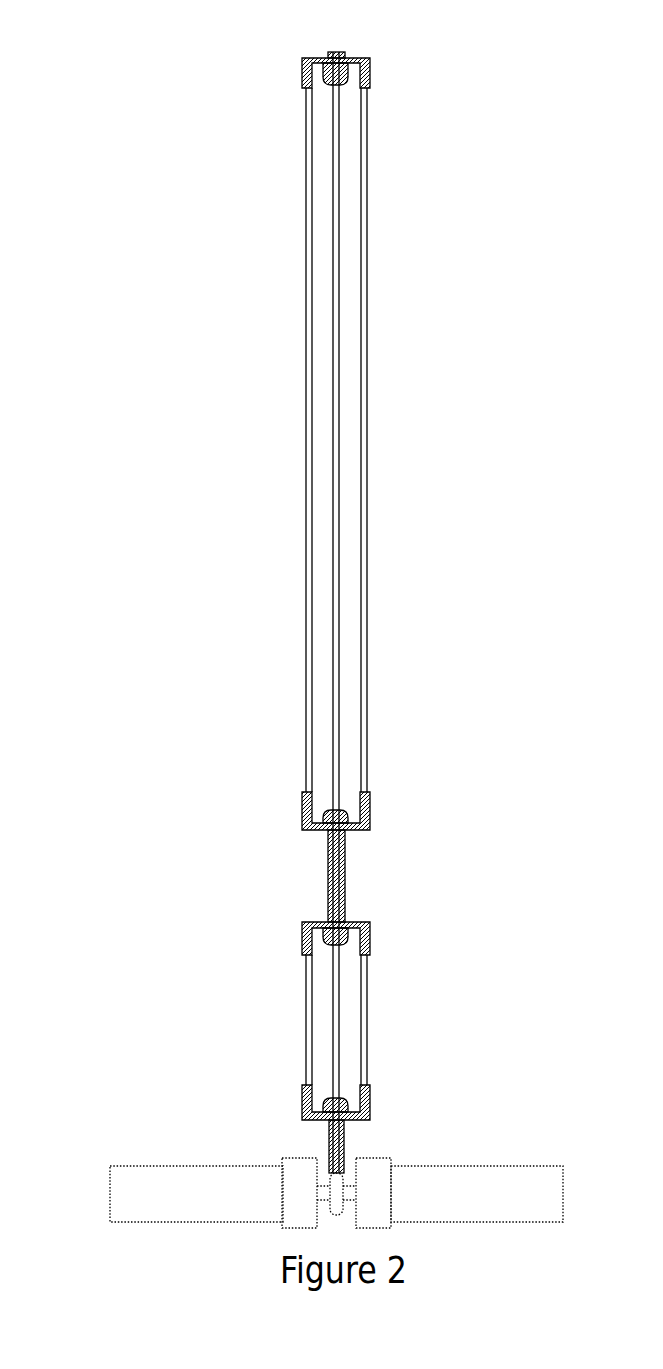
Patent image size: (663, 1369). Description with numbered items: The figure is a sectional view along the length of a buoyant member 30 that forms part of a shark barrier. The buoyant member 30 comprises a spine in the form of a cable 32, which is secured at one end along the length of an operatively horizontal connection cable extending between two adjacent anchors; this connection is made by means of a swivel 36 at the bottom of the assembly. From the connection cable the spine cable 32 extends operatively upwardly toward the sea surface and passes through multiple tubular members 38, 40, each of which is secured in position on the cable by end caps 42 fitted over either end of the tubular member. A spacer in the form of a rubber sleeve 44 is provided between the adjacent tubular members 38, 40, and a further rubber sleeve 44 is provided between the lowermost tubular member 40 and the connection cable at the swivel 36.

The buoyant member 30 is at (137, 307).
The spine cable 32 is at (340, 435).
The swivel 36 is at (330, 1170).
The tubular member 38 is at (368, 292).
The lowermost tubular member 40 is at (368, 1028).
The end cap 42 is at (368, 80).
The rubber sleeve 44 is at (343, 878).